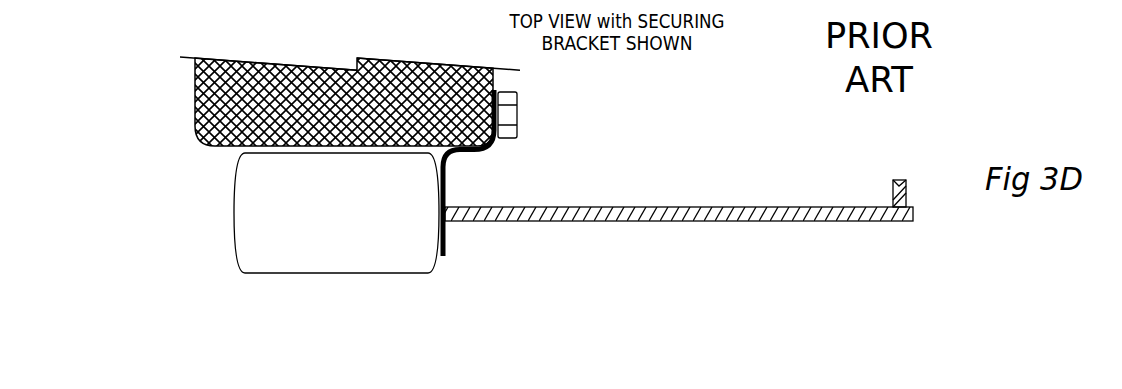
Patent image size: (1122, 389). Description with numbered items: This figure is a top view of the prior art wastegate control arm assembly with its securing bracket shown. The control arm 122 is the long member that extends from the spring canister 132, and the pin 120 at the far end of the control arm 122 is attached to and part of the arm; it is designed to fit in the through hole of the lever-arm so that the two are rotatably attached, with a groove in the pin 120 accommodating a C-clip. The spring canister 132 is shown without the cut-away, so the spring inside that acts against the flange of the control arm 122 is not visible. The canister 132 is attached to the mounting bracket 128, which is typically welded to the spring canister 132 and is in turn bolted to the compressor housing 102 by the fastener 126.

The compressor housing 102 is at (277, 88).
The pin 120 is at (908, 193).
The control arm 122 is at (783, 212).
The bolt / nut 126 is at (518, 108).
The mounting bracket 128 is at (457, 157).
The spring canister 132 is at (273, 275).